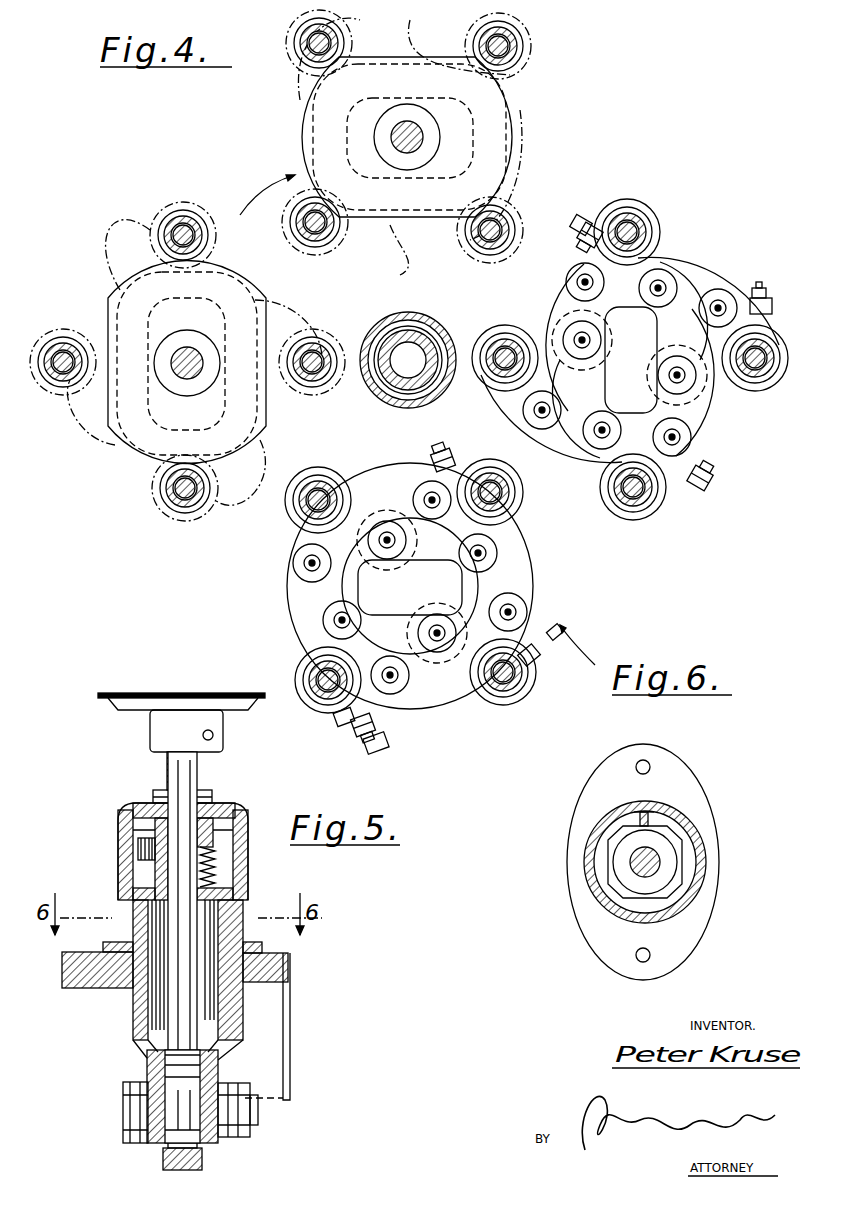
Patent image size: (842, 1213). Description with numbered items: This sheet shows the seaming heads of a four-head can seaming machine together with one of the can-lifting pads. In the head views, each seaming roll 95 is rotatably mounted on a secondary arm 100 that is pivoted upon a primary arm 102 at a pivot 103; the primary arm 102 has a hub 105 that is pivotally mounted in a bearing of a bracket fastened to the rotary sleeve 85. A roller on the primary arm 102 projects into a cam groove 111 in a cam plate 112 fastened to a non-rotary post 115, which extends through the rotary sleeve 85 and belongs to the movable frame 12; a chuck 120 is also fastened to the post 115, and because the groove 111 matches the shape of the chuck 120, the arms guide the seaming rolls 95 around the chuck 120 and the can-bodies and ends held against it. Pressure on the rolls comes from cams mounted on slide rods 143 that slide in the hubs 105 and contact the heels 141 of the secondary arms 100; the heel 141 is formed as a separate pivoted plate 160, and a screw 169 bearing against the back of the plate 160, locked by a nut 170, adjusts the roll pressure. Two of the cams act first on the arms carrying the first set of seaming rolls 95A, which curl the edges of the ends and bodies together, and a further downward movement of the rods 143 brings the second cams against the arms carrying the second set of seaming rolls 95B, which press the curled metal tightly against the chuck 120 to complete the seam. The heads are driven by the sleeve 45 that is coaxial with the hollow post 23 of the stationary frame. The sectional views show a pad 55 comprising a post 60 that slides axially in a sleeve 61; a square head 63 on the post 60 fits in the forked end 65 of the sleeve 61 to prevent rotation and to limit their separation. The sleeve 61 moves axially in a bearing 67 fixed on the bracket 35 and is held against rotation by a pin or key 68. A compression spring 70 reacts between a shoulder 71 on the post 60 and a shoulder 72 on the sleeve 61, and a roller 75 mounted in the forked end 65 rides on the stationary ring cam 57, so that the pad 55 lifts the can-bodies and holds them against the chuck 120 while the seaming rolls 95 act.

In FIG. 4, the movable frame 12 is at (440, 340).
In FIG. 4, the hollow post 23 is at (400, 392).
In FIG. 4, the sleeve 45 is at (385, 376).
In FIG. 4, the rotary sleeve 85 is at (405, 108).
In FIG. 4, the seaming roll 95 is at (670, 262).
In FIG. 4, the first set of seaming rolls 95A is at (556, 355).
In FIG. 4, the second set of seaming rolls 95B is at (365, 524).
In FIG. 4, the secondary arm 100 is at (702, 272).
In FIG. 4, the primary arm 102 is at (572, 304).
In FIG. 4, the pivot 103 is at (722, 302).
In FIG. 4, the hub 105 is at (302, 58).
In FIG. 4, the cam groove 111 is at (505, 150).
In FIG. 4, the cam plate 112 is at (513, 115).
In FIG. 4, the non-rotary post 115 is at (395, 137).
In FIG. 4, the chuck 120 is at (500, 92).
In FIG. 4, the heel 141 is at (468, 462).
In FIG. 4, the slide rod 143 is at (522, 44).
In FIG. 4, the pivoted plate 160 is at (592, 225).
In FIG. 4, the adjusting screw 169 is at (760, 288).
In FIG. 4, the lock nut 170 is at (764, 300).
In FIG. 5, the bracket 35 is at (62, 972).
In FIG. 5, the pad 55 is at (97, 695).
In FIG. 5, the ring cam 57 is at (202, 1162).
In FIG. 5, the post 60 is at (182, 1020).
In FIG. 6, the post 60 is at (640, 865).
In FIG. 5, the sleeve 61 is at (135, 1045).
In FIG. 6, the sleeve 61 is at (690, 872).
In FIG. 5, the square head 63 is at (165, 1058).
In FIG. 5, the forked end 65 is at (212, 1070).
In FIG. 5, the bearing 67 is at (245, 915).
In FIG. 6, the bearing 67 is at (578, 803).
In FIG. 6, the pin or key 68 is at (652, 818).
In FIG. 5, the compression spring 70 is at (140, 862).
In FIG. 5, the shoulder 71 is at (125, 813).
In FIG. 5, the shoulder 72 is at (132, 900).
In FIG. 5, the roller 75 is at (185, 1113).